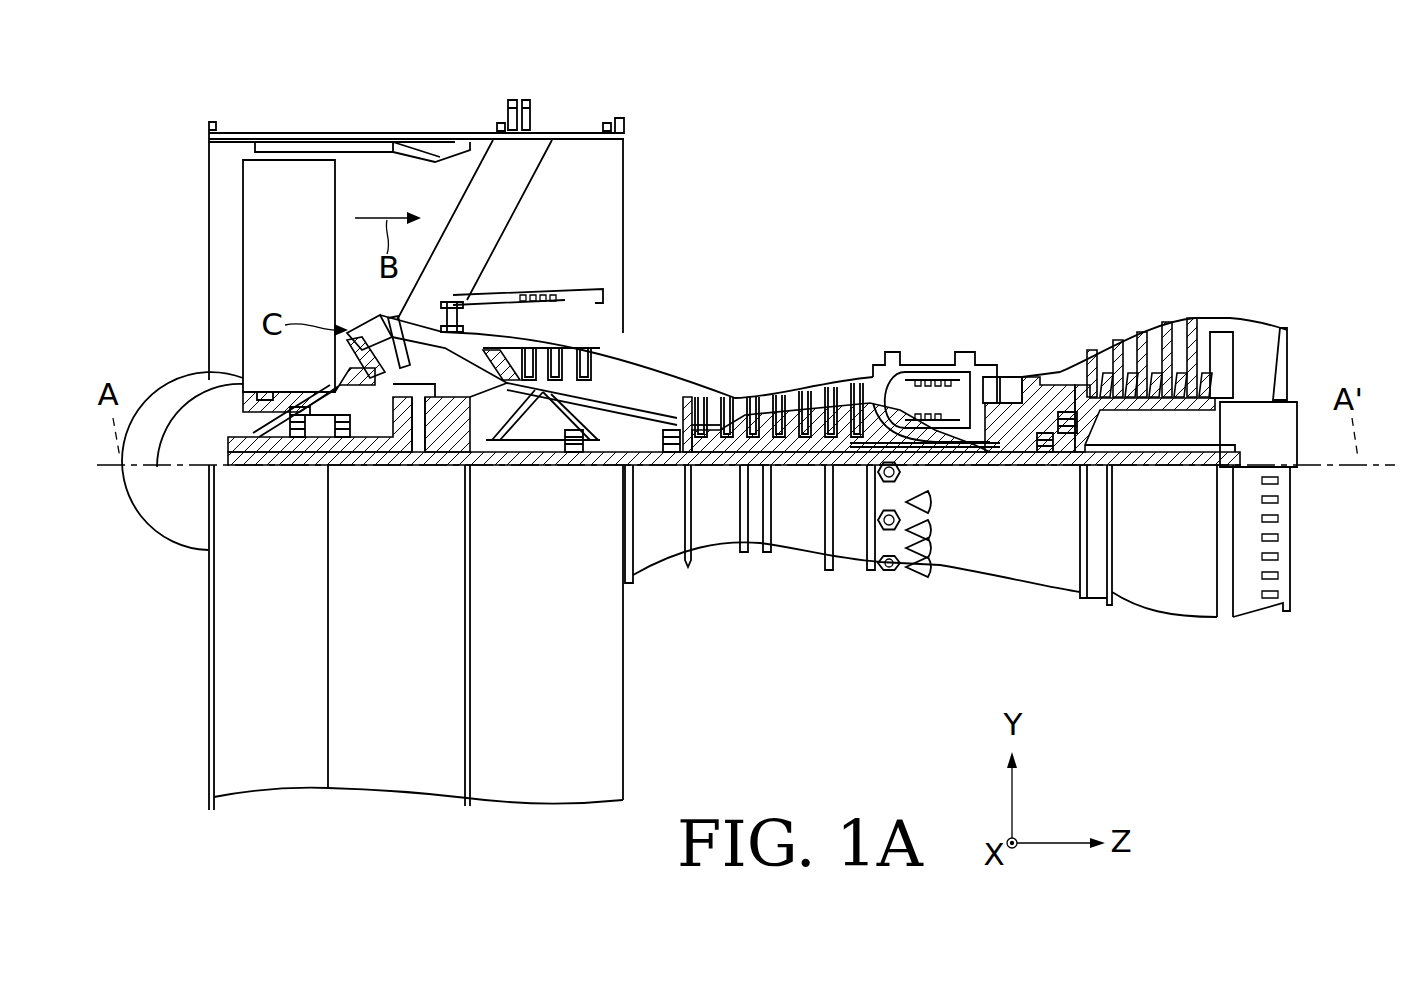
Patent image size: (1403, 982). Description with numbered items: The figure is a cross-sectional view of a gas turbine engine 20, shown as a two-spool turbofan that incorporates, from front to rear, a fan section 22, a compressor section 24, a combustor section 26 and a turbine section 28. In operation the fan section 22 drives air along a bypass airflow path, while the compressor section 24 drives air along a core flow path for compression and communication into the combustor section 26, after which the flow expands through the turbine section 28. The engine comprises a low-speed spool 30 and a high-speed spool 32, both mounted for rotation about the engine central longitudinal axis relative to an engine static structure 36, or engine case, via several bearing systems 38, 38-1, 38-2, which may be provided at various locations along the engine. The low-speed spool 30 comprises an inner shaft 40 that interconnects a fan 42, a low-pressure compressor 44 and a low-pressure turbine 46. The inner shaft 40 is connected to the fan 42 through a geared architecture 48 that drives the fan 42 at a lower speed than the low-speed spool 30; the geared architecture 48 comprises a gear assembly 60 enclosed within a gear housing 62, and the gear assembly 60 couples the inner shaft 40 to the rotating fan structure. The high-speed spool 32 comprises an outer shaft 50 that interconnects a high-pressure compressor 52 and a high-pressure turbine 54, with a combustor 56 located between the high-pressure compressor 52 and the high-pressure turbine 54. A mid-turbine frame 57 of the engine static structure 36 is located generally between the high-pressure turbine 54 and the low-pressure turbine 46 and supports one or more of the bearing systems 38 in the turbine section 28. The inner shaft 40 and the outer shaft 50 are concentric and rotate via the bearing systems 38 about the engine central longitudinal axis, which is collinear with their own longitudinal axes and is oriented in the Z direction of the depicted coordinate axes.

The gas turbine engine 20 is at (993, 163).
The fan section 22 is at (465, 108).
The compressor section 24 is at (473, 250).
The combustor section 26 is at (875, 250).
The turbine section 28 is at (990, 250).
The low-speed spool 30 is at (803, 476).
The high-speed spool 32 is at (850, 425).
The engine static structure 36 is at (193, 796).
The bearing system 38 is at (1068, 435).
The bearing system 38-1 is at (300, 437).
The bearing system 38-2 is at (575, 447).
The inner shaft 40 is at (650, 468).
The fan 42 is at (282, 270).
The low-pressure compressor 44 is at (550, 352).
The low-pressure turbine 46 is at (1150, 336).
The geared architecture 48 is at (430, 483).
The outer shaft 50 is at (930, 450).
The high-pressure compressor 52 is at (783, 425).
The high-pressure turbine 54 is at (1010, 376).
The combustor 56 is at (928, 400).
The mid-turbine frame 57 is at (1050, 372).
The gear assembly 60 is at (437, 447).
The gear housing 62 is at (437, 410).